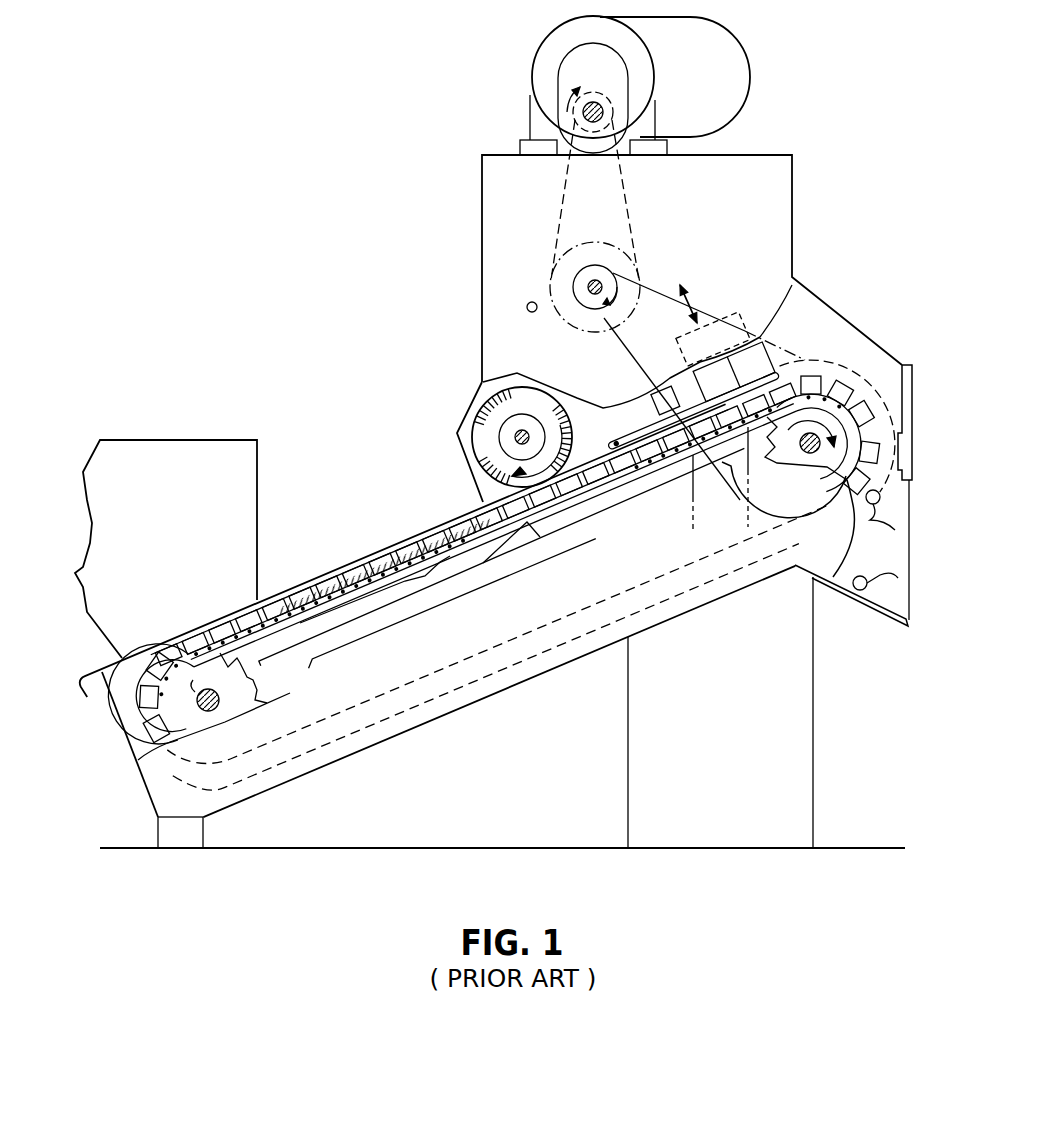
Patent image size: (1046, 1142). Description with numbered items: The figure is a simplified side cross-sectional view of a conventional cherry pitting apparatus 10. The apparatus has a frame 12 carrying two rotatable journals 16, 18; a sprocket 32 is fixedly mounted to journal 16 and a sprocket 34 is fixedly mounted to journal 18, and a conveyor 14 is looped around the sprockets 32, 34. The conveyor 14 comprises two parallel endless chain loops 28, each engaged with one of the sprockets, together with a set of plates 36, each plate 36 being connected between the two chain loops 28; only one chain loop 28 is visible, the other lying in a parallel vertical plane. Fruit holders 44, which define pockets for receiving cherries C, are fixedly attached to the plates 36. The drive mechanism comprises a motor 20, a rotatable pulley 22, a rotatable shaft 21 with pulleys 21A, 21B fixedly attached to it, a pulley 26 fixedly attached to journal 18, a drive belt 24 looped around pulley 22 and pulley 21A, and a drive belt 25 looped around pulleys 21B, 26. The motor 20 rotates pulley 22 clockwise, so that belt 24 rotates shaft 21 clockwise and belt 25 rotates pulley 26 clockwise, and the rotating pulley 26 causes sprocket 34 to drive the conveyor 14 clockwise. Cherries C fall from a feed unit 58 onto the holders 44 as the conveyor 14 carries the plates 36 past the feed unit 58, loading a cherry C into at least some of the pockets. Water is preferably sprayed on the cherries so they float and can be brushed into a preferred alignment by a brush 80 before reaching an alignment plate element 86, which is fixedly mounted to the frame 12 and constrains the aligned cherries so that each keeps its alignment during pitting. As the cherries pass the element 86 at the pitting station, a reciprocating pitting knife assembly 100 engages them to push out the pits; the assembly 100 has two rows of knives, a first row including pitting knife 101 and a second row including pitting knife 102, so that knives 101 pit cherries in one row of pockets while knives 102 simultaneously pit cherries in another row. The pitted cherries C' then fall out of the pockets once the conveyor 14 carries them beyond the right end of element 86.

The pitting apparatus 10 is at (422, 728).
The frame 12 is at (277, 777).
The conveyor 14 is at (142, 728).
The rotatable journal 16 is at (196, 692).
The rotatable journal 18 is at (806, 440).
The motor 20 is at (727, 47).
The rotatable shaft 21 is at (588, 287).
The pulley 21A is at (560, 322).
The pulley 21B is at (588, 278).
The rotatable pulley 22 is at (593, 98).
The drive belt 24 is at (627, 197).
The drive belt 25 is at (662, 298).
The pulley 26 is at (800, 357).
The endless chain loops 28 is at (190, 628).
The sprocket 32 is at (240, 700).
The sprocket 34 is at (793, 462).
The plates 36 is at (397, 580).
The fruit holders 44 is at (143, 693).
The feed unit 58 is at (202, 445).
The brush 80 is at (475, 415).
The alignment plate element 86 is at (630, 418).
The reciprocating pitting knife assembly 100 is at (733, 338).
The pitting knife 101 is at (656, 386).
The pitting knife 102 is at (806, 350).
The cherry C is at (475, 524).
The pitted cherry C' is at (896, 556).